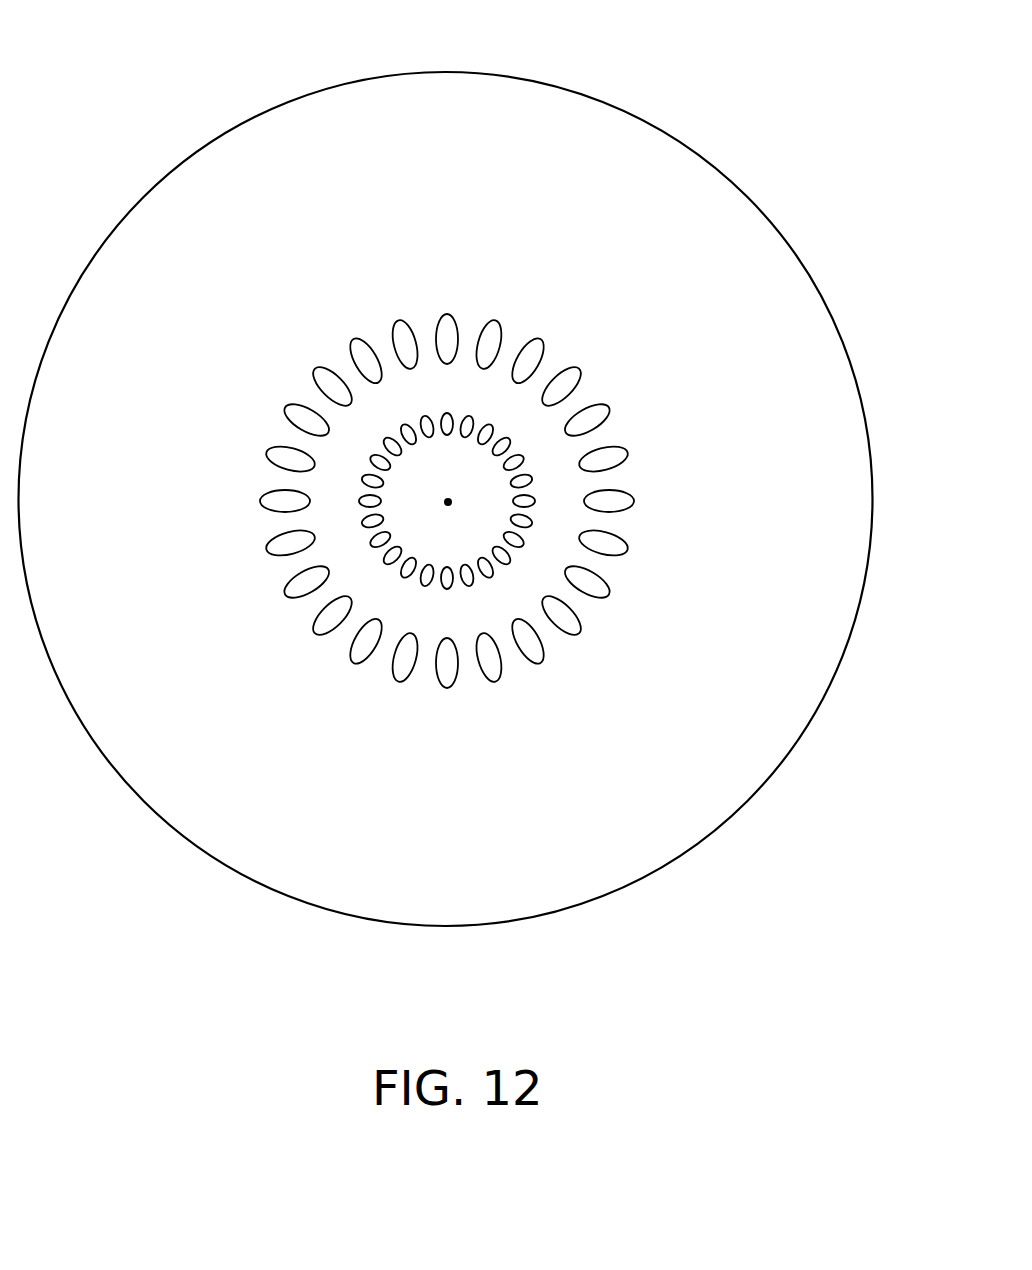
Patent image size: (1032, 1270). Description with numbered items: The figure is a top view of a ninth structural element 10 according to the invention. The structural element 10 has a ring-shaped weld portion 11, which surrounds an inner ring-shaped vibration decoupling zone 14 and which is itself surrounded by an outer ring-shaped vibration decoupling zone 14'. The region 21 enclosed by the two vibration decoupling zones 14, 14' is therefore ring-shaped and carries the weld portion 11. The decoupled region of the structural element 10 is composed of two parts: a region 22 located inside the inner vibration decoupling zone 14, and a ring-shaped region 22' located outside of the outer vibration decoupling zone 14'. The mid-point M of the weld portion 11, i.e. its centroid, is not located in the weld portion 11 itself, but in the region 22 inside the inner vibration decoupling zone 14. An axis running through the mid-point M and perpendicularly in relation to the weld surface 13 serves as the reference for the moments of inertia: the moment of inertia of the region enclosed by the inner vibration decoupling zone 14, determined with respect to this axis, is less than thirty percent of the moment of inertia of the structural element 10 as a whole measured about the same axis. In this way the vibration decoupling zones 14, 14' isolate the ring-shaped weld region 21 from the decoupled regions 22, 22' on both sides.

The structural element 10 is at (730, 49).
The weld portion 11 is at (513, 600).
The weld surface 13 is at (462, 615).
The inner ring-shaped vibration decoupling zone 14 is at (637, 480).
The outer ring-shaped vibration decoupling zone 14' is at (533, 605).
The region enclosed by the vibration decoupling zones 21 is at (565, 528).
The region located inside the inner vibration decoupling zone 22 is at (616, 371).
The ring-shaped region located outside of the vibration decoupling zone 22' is at (730, 161).
The mid-point M is at (448, 502).